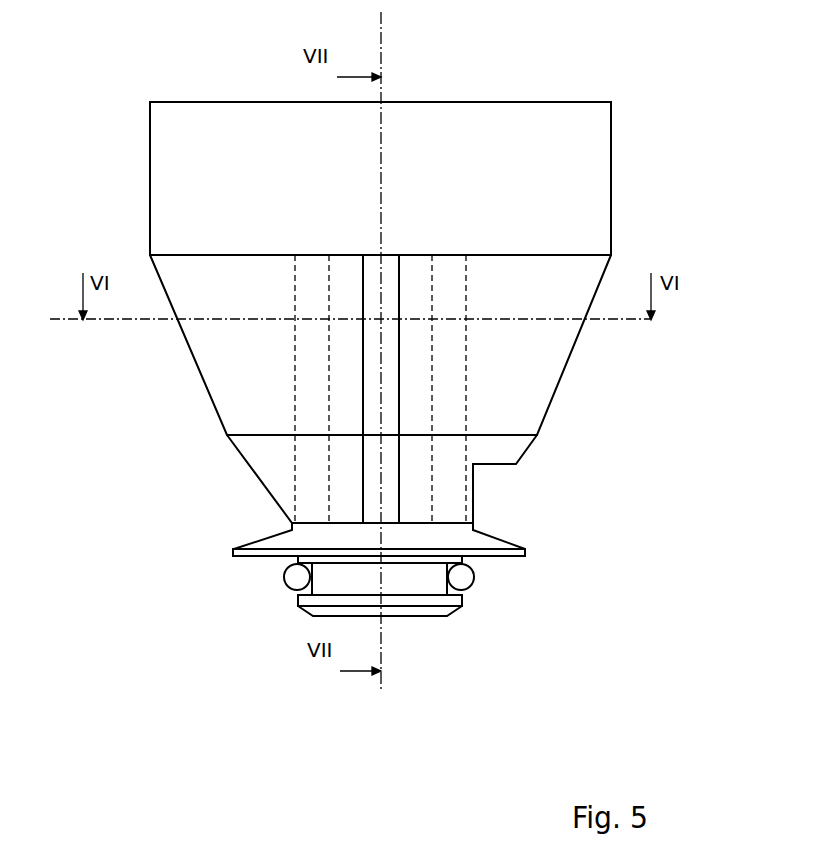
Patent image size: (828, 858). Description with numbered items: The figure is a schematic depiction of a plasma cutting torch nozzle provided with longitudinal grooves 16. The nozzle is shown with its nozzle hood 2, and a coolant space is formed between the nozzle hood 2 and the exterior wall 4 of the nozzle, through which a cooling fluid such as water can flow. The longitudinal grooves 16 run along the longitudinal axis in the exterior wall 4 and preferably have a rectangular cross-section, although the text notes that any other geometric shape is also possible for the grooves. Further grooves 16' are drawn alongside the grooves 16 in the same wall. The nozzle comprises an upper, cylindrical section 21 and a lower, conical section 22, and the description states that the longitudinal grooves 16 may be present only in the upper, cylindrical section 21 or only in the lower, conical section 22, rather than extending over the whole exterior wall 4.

The nozzle hood 2 is at (526, 121).
The upper, cylindrical section 21 is at (612, 204).
The lower, conical section 22 is at (572, 353).
The exterior wall 4 is at (553, 402).
The longitudinal grooves 16 is at (397, 349).
The additional channels 16' is at (400, 350).